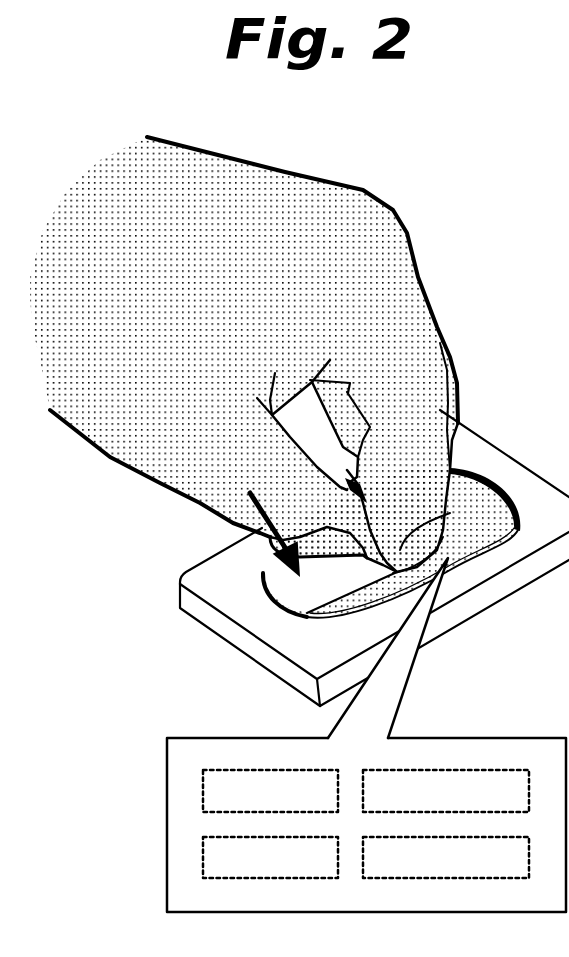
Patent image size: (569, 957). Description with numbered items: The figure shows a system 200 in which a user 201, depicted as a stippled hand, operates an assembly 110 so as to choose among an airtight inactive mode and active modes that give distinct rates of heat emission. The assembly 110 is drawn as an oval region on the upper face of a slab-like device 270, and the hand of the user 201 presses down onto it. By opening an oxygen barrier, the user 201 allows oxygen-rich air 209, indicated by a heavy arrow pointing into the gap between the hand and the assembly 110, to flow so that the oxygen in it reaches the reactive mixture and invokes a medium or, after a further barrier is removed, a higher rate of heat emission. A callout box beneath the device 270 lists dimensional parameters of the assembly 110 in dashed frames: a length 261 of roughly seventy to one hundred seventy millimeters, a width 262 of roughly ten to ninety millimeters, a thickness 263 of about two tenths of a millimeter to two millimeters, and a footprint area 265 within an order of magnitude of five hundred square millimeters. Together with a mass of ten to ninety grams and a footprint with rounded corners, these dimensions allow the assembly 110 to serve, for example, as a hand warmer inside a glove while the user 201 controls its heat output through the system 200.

The system 200 is at (299, 421).
The user 201 is at (177, 316).
The oxygen-rich air 209 is at (273, 517).
The device 270 is at (193, 607).
The assembly 110 is at (483, 543).
The length 261 is at (270, 791).
The width 262 is at (270, 857).
The thickness 263 is at (446, 791).
The footprint area 265 is at (446, 857).